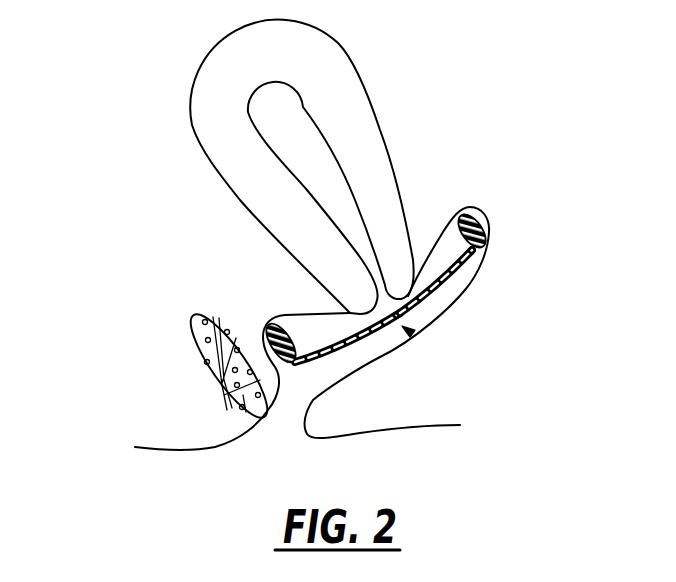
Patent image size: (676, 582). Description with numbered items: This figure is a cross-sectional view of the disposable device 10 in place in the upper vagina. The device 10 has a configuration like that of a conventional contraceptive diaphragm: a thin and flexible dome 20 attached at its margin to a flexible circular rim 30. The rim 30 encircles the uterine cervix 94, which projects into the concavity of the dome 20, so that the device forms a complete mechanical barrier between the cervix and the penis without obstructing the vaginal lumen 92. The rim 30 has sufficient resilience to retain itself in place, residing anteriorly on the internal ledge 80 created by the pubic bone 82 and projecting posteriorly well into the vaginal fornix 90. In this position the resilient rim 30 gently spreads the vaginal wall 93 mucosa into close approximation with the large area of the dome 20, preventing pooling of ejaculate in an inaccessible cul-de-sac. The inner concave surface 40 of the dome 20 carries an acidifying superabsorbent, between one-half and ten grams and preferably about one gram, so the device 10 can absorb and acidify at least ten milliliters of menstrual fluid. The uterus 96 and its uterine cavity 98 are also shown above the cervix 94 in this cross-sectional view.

The disposable device 10 is at (401, 288).
The dome 20 is at (476, 278).
The rim 30 is at (489, 228).
The concave surface of the dome 40 is at (326, 348).
The ledge 80 is at (275, 367).
The pubic bone 82 is at (196, 352).
The vaginal fornix 90 is at (473, 208).
The vaginal lumen 92 is at (342, 365).
The vaginal wall 93 is at (385, 352).
The uterine cervix 94 is at (390, 302).
The uterus 96 is at (322, 52).
The uterine cavity 98 is at (293, 122).